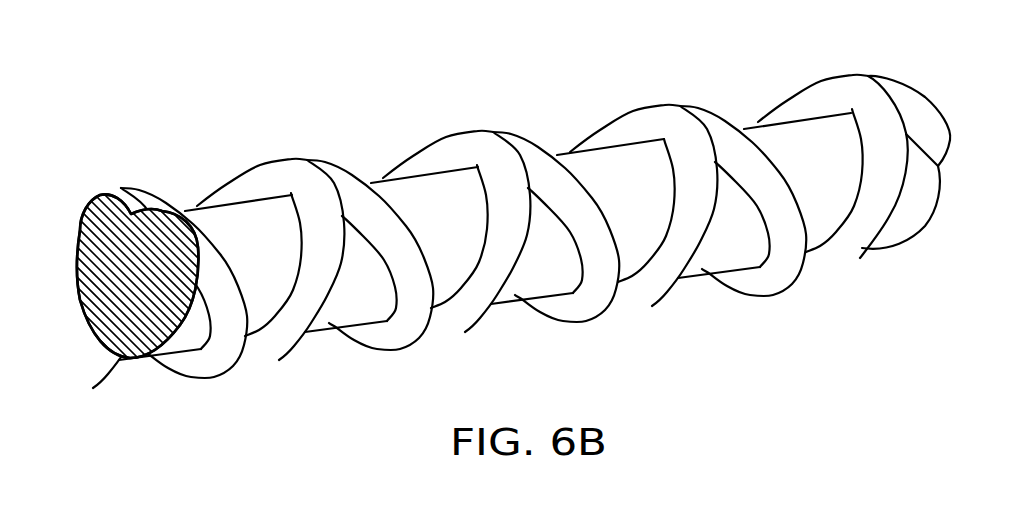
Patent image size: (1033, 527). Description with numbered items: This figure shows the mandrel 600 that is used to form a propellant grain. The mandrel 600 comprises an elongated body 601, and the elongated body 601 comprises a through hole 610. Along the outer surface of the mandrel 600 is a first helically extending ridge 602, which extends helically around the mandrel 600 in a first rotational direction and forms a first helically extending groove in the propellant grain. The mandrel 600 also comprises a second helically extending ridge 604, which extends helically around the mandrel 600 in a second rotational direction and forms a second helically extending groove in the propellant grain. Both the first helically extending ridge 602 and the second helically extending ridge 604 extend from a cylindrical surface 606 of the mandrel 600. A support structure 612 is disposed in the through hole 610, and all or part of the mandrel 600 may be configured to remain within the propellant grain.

The mandrel 600 is at (496, 230).
The elongated body 601 is at (730, 69).
The first helically extending ridge 602 is at (313, 264).
The second helically extending ridge 604 is at (427, 160).
The cylindrical surface 606 is at (607, 165).
The through hole 610 is at (138, 352).
The support structure 612 is at (131, 230).